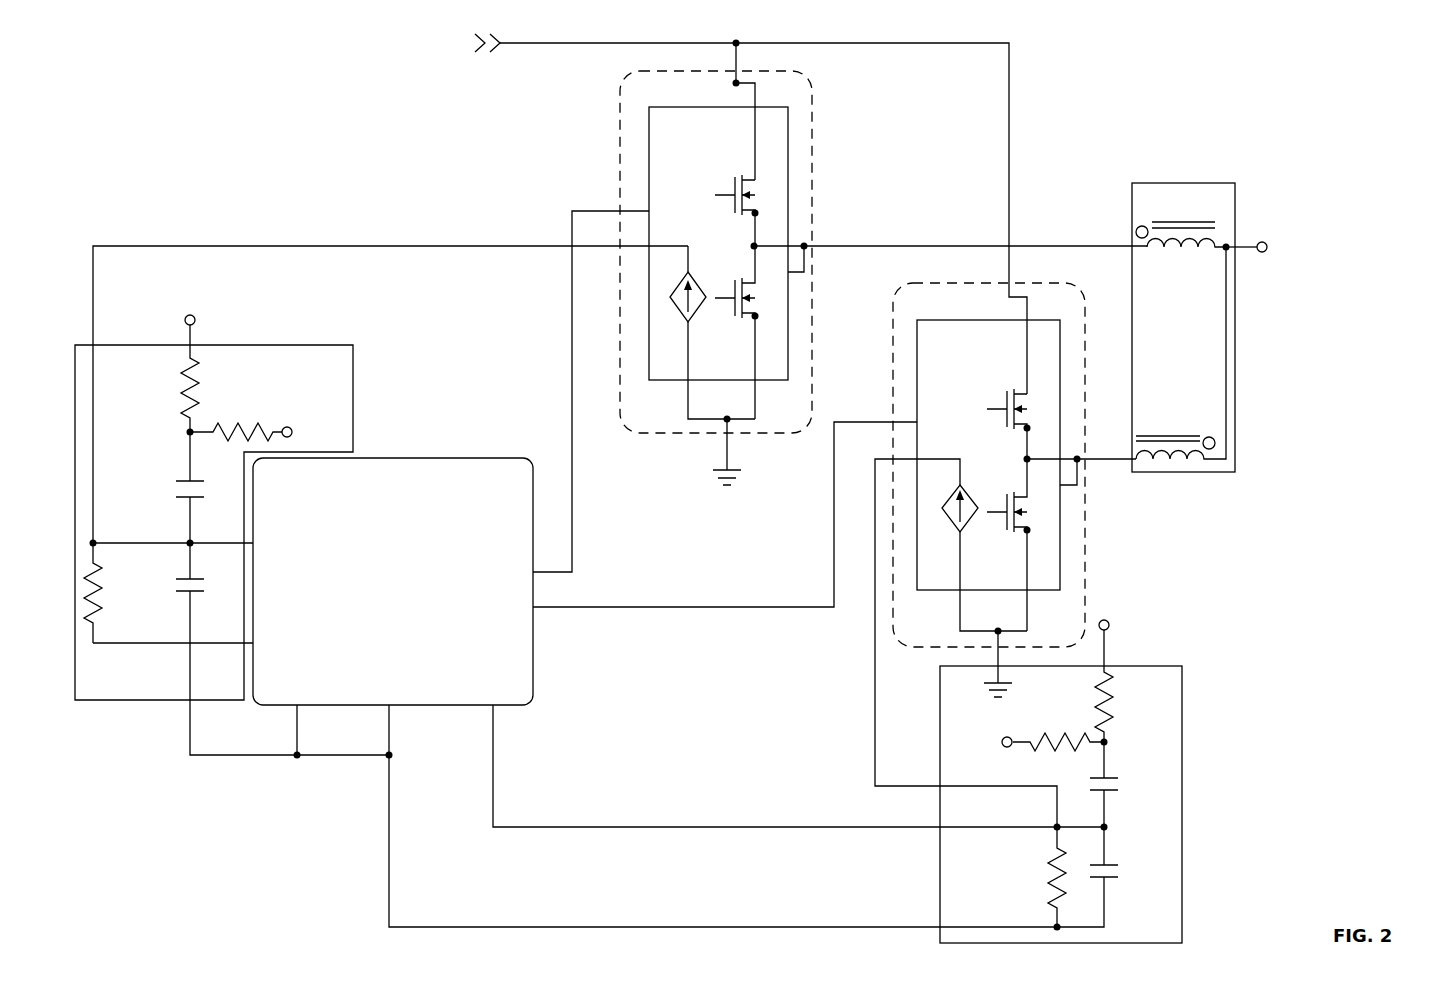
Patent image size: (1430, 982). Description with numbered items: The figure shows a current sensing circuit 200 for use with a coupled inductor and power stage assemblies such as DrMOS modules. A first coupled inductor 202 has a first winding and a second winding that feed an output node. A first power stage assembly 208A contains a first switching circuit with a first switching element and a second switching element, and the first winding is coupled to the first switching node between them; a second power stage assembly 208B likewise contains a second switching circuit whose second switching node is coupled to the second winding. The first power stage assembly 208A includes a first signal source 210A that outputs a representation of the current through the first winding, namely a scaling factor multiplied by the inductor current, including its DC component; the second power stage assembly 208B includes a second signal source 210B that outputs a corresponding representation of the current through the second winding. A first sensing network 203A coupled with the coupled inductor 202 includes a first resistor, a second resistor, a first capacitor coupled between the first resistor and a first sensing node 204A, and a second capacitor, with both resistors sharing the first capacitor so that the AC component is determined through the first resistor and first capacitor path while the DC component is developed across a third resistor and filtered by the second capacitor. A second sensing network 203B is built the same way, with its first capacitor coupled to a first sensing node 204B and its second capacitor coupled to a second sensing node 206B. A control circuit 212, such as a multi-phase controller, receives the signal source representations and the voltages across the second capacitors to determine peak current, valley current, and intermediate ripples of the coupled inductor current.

The current sensing circuit 200 is at (1242, 60).
The first coupled inductor 202 is at (1215, 183).
The first sensing network 203A is at (1160, 666).
The second sensing network 203B is at (240, 345).
The first sensing node 204A is at (1105, 818).
The first sensing node 204B is at (186, 541).
The second sensing node 206B is at (198, 648).
The first power stage assembly 208A is at (1022, 285).
The second power stage assembly 208B is at (810, 86).
The first signal source 210A is at (946, 505).
The second signal source 210B is at (680, 270).
The control circuit 212 is at (386, 458).